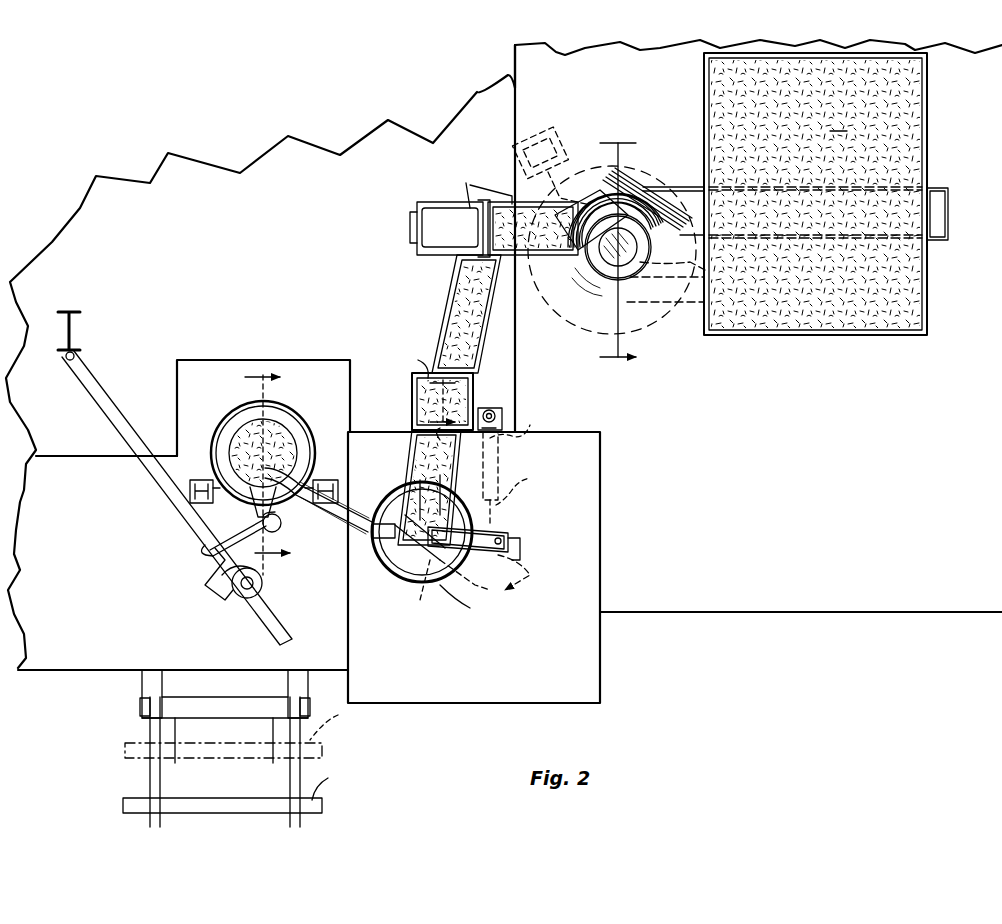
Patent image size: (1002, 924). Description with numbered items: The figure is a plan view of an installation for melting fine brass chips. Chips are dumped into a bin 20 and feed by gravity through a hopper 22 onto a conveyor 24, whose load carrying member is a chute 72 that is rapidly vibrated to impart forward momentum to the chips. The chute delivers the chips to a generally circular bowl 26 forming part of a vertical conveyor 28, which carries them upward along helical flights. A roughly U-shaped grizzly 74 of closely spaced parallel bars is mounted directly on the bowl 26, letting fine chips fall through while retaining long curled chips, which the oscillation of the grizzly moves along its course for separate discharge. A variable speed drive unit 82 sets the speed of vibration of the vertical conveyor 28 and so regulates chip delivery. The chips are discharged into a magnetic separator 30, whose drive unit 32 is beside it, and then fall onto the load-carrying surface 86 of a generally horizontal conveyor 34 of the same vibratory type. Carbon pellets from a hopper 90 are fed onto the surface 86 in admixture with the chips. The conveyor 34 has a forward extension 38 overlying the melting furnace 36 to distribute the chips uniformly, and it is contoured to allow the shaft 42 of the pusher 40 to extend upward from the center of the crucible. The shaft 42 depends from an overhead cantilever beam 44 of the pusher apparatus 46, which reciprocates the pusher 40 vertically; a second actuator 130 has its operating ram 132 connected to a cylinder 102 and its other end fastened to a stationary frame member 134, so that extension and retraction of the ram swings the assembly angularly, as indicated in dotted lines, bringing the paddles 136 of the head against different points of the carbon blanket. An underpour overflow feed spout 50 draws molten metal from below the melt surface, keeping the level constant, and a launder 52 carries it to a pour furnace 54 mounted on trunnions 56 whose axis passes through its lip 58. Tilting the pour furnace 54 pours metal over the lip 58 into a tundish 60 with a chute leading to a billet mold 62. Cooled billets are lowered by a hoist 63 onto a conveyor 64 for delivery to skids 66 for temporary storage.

The bin 20 is at (930, 268).
The hopper 22 is at (925, 185).
The conveyor 24 is at (950, 205).
The bowl 26 is at (635, 175).
The vertical conveyor 28 is at (598, 290).
The magnetic separator 30 is at (503, 205).
The drive unit 32 is at (425, 235).
The horizontal conveyor 34 is at (440, 290).
The melting furnace 36 is at (398, 582).
The forward extension 38 is at (405, 478).
The pusher 40 is at (400, 560).
The shaft 42 is at (420, 598).
The cantilever beam 44 is at (500, 572).
The pusher apparatus 46 is at (503, 530).
The underpour overflow feed spout 50 is at (380, 526).
The launder 52 is at (312, 560).
The pour furnace 54 is at (298, 410).
The trunnions 56 is at (218, 485).
The lip 58 is at (252, 522).
The tundish 60 is at (282, 528).
The billet mold 62 is at (232, 592).
The hoist 63 is at (145, 472).
The conveyor 64 is at (205, 730).
The skids 66 is at (300, 770).
The chute 72 is at (686, 192).
The grizzly 74 is at (700, 265).
The variable speed drive unit 82 is at (538, 135).
The load-carrying surface 86 is at (478, 321).
The hopper 90 is at (412, 398).
The cylinder 102 is at (520, 545).
The second actuator 130 is at (516, 450).
The operating ram 132 is at (516, 490).
The stationary frame member 134 is at (490, 408).
The paddles 136 is at (365, 540).